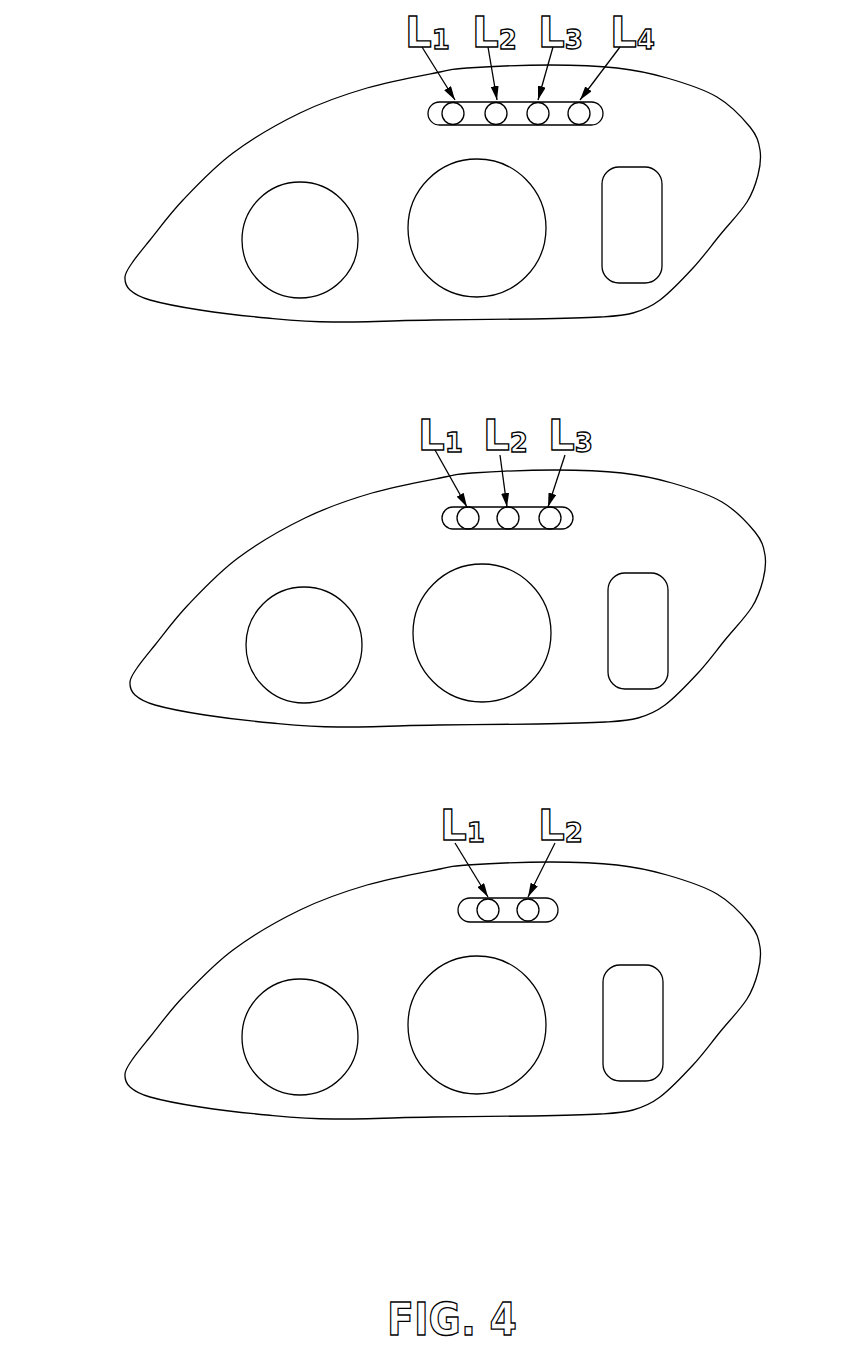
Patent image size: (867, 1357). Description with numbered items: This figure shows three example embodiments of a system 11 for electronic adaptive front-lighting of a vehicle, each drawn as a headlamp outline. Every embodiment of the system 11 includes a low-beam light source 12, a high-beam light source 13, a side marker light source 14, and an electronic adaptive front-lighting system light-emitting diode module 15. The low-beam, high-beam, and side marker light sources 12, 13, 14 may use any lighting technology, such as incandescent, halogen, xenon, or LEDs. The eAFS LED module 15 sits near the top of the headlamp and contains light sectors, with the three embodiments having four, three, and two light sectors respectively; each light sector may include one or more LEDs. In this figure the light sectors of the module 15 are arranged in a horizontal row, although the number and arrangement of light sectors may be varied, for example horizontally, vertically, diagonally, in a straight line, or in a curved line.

The system for electronic adaptive front-lighting 11 is at (185, 117).
The low-beam light source 12 is at (494, 248).
The high-beam light source 13 is at (318, 254).
The side marker light source 14 is at (651, 248).
The electronic adaptive front-lighting system light-emitting diode module 15 is at (607, 110).